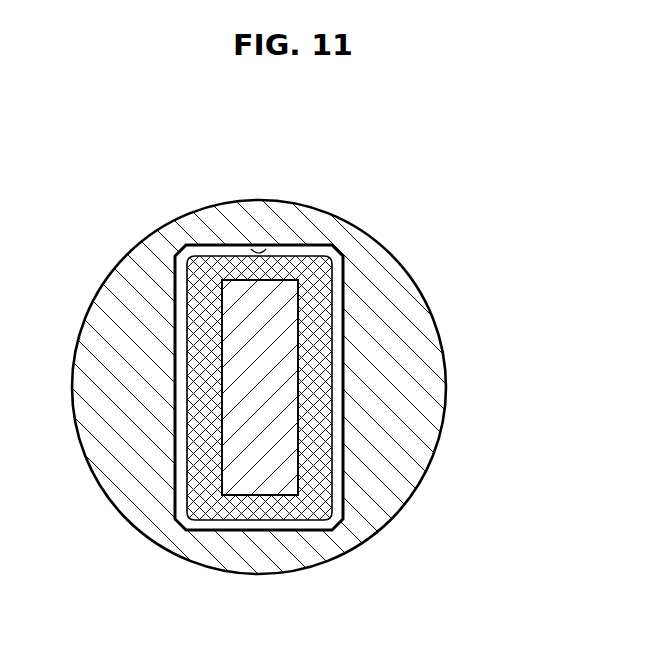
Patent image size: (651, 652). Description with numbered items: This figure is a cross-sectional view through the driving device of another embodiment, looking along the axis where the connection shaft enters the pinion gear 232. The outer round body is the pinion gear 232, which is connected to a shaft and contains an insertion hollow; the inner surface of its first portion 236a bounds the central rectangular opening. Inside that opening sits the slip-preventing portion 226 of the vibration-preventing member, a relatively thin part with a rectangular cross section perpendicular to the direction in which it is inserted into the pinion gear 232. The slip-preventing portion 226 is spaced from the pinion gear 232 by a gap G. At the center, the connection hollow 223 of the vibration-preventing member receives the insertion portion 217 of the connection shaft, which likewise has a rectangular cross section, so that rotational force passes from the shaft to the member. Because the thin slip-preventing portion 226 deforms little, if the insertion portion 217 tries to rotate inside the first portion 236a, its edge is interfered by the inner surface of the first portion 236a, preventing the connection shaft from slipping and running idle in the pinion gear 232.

The pinion gear 232 is at (383, 268).
The first portion of the insertion hollow 236a is at (338, 398).
The slip-preventing portion 226 is at (322, 358).
The connection hollow 223 is at (280, 473).
The insertion portion 217 is at (240, 463).
The gap G is at (259, 250).